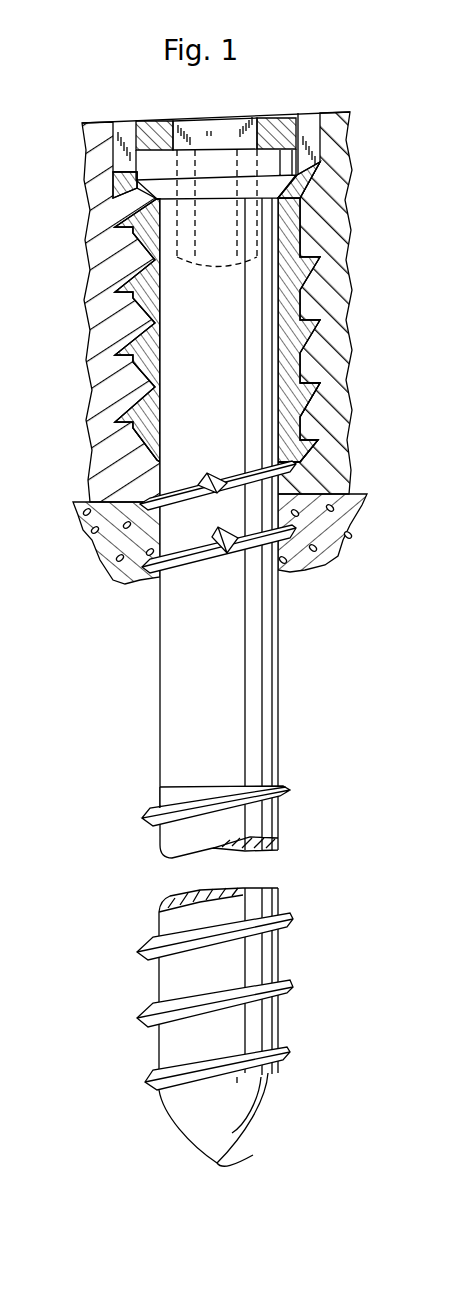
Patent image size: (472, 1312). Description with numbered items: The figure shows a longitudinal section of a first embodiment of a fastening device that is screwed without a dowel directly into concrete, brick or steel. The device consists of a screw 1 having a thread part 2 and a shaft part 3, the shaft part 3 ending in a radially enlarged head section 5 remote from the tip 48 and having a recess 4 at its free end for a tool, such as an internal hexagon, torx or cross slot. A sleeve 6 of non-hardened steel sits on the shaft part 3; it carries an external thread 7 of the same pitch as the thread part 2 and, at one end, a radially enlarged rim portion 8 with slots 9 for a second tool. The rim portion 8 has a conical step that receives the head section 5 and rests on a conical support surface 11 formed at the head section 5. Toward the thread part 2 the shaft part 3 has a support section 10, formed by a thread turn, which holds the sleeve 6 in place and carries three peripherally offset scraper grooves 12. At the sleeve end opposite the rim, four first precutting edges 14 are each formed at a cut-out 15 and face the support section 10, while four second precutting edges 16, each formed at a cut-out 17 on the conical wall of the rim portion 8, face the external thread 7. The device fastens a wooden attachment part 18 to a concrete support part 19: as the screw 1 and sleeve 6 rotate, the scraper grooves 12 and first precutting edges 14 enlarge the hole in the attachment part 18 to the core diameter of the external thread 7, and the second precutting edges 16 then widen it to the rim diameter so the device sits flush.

The screw 1 is at (157, 671).
The thread part 2 is at (170, 798).
The shaft part 3 is at (173, 308).
The recess 4 is at (223, 127).
The head section 5 is at (157, 130).
The sleeve 6 is at (287, 355).
The external thread 7 is at (305, 387).
The rim portion 8 is at (308, 175).
The slots 9 is at (310, 123).
The support section 10 is at (170, 474).
The support surface 11 is at (152, 194).
The scraper grooves 12 is at (203, 477).
The first precutting edges 14 is at (295, 448).
The cut-out 15 is at (300, 437).
The second precutting edges 16 is at (313, 202).
The cut-out 17 is at (327, 190).
The attachment part 18 is at (323, 303).
The support part 19 is at (332, 537).
The tip 48 is at (251, 1155).